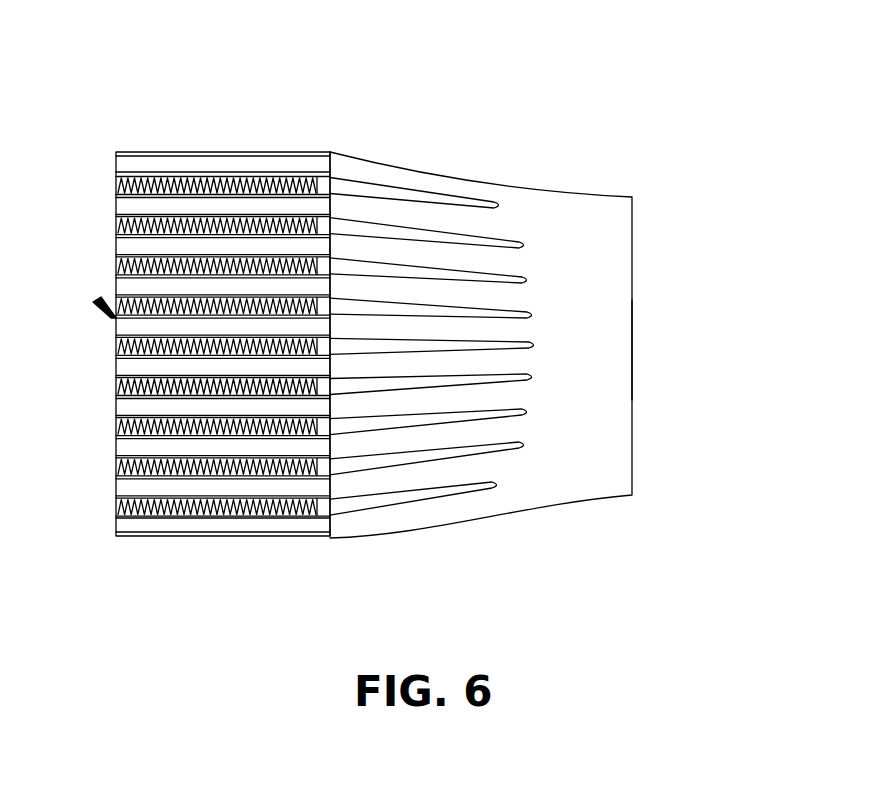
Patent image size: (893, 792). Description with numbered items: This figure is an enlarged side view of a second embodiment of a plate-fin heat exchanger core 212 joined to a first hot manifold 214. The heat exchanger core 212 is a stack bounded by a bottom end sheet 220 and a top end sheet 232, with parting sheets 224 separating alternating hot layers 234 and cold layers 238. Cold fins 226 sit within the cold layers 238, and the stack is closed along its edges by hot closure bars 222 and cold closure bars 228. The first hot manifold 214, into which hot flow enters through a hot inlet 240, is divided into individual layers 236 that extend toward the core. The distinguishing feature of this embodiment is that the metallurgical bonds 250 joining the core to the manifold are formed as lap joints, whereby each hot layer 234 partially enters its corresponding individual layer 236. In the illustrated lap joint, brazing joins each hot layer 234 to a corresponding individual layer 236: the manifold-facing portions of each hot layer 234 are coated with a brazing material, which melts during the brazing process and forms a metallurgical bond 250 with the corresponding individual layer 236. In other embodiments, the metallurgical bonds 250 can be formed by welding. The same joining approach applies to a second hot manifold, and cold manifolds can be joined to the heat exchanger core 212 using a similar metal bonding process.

The heat exchanger core 212 is at (213, 78).
The first hot manifold 214 is at (553, 183).
The bottom end sheet 220 is at (228, 536).
The hot closure bars 222 is at (198, 522).
The parting sheets 224 is at (115, 177).
The cold fins 226 is at (117, 468).
The cold closure bars 228 is at (326, 228).
The top end sheet 232 is at (145, 152).
The hot layers 234 is at (280, 208).
The individual layers 236 is at (483, 225).
The cold layers 238 is at (115, 248).
The hot inlet 240 is at (726, 263).
The metallurgical bonds 250 is at (332, 152).